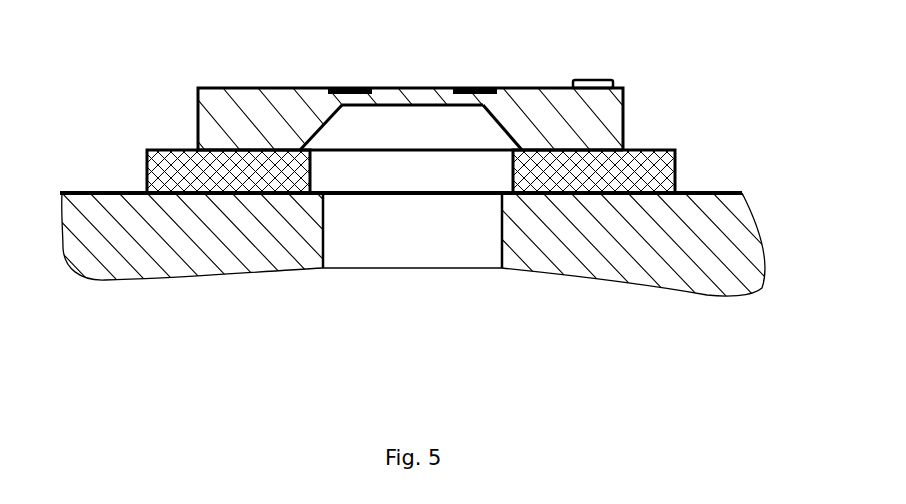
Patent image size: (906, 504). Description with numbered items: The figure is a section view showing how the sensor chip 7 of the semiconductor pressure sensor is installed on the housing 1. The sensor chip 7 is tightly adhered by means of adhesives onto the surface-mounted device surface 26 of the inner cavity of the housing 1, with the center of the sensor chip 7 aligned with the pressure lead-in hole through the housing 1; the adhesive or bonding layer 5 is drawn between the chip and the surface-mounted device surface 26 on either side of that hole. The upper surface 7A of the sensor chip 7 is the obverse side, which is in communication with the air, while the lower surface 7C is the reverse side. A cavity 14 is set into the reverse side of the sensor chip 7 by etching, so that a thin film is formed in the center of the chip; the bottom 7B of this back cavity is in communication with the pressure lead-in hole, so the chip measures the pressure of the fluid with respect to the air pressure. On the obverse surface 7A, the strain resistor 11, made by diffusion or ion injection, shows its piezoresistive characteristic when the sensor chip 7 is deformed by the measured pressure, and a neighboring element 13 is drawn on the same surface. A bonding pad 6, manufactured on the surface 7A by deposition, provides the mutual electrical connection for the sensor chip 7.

The housing 1 is at (706, 262).
The surface-mounted device surface 26 is at (707, 192).
The support/bonding layer 5 is at (587, 167).
The sensor chip 7 is at (293, 107).
The surface of the sensor chip 7A is at (423, 86).
The bottom of the back cavity 7B is at (410, 100).
The surface of the sensor chip 7C is at (262, 140).
The cavity 14 is at (378, 120).
The electrode 13 is at (395, 96).
The strain resistor 11 is at (465, 86).
The bonding pad 6 is at (603, 78).